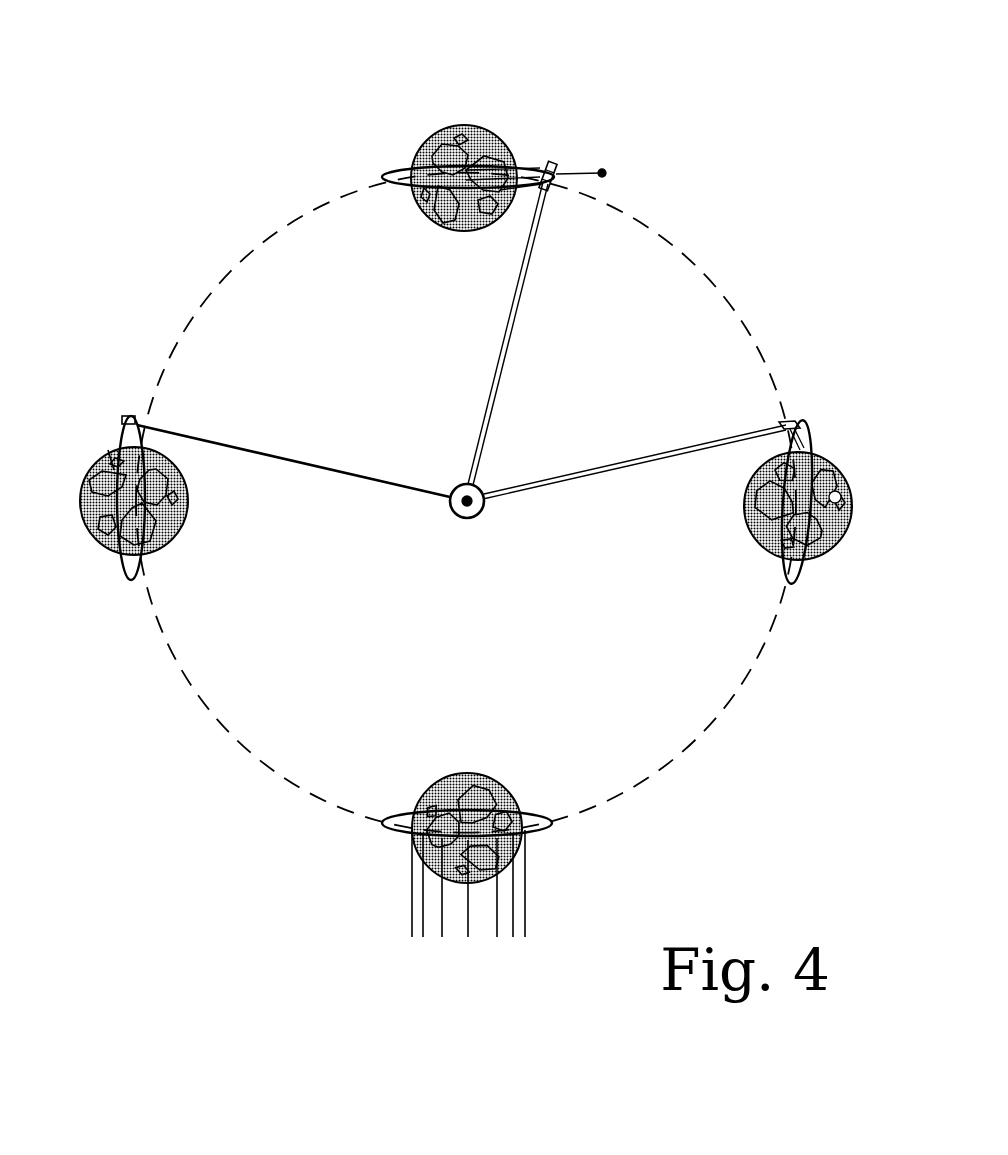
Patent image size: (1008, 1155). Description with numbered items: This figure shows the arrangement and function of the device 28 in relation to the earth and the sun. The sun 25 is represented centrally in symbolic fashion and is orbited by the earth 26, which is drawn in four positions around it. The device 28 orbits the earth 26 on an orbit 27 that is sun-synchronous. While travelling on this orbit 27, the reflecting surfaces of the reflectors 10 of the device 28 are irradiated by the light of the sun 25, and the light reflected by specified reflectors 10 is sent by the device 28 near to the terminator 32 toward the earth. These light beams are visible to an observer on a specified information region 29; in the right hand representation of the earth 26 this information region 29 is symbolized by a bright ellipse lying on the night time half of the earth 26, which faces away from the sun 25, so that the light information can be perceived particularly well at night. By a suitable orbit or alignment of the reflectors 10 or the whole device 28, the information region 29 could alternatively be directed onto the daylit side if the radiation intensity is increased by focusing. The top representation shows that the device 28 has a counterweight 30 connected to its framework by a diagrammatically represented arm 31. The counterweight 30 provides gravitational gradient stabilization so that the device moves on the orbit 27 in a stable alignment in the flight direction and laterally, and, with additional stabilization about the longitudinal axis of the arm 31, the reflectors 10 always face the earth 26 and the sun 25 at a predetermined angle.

The reflector 10 is at (547, 162).
The sun 25 is at (470, 509).
The earth 26 is at (443, 142).
The orbit 27 is at (388, 168).
The device 28 is at (572, 130).
The information region 29 is at (843, 490).
The counterweight 30 is at (604, 175).
The arm 31 is at (580, 170).
The terminator 32 is at (108, 455).